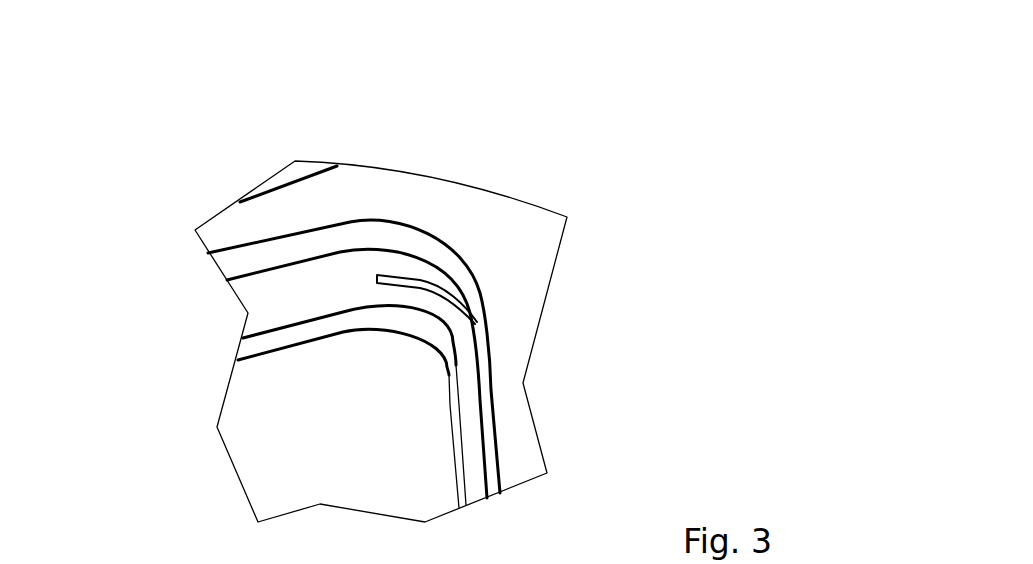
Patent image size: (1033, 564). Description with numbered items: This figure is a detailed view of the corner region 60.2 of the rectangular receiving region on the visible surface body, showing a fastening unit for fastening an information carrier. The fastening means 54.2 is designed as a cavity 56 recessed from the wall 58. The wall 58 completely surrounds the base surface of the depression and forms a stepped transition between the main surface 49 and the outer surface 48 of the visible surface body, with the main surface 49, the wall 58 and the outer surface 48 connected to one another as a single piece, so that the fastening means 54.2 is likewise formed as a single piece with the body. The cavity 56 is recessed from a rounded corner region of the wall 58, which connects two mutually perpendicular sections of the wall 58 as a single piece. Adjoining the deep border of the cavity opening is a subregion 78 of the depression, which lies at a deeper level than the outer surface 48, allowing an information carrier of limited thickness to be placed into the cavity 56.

The outer surface 48 is at (316, 399).
The main surface 49 is at (517, 342).
The fastening means 54.2 is at (418, 266).
The cavity 56 is at (413, 282).
The wall 58 is at (285, 278).
The corner region 60.2 is at (415, 362).
The subregion 78 is at (468, 430).